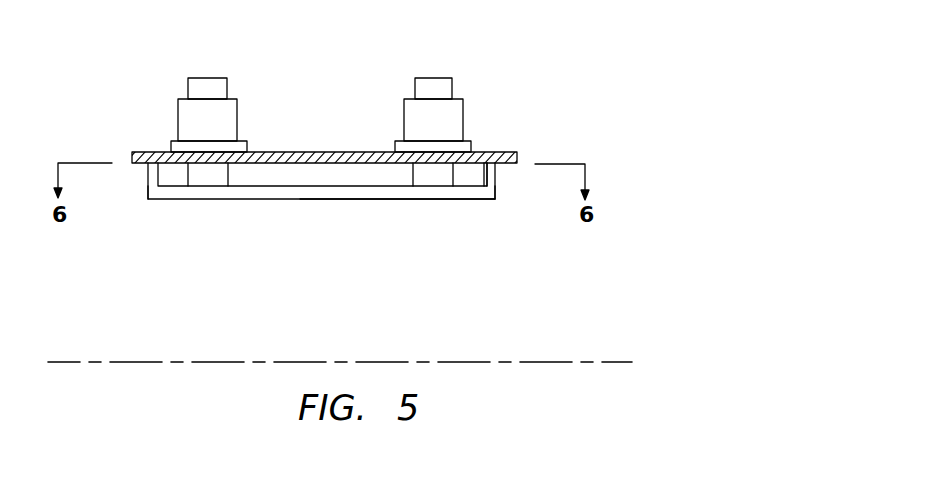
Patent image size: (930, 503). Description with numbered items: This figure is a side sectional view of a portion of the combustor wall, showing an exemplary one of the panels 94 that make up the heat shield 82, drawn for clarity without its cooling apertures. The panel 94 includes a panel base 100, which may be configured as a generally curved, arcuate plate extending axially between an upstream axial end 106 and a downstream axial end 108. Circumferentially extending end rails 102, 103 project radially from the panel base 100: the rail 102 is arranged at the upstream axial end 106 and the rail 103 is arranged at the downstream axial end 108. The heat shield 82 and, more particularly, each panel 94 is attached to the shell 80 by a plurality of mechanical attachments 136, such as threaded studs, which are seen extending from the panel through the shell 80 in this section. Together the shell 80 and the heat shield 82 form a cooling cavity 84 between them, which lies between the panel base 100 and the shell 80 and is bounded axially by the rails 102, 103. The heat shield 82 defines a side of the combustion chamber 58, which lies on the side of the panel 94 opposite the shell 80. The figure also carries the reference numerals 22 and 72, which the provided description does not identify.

The ground / reference plane 22 is at (630, 360).
The combustion chamber 58 is at (363, 290).
The upper region / surface 72 is at (325, 70).
The shell 80 is at (503, 157).
The heat shield 82 is at (397, 244).
The panel 94 is at (460, 203).
The cooling cavity 84 is at (312, 178).
The panel base 100 is at (253, 200).
The end rail 102 is at (154, 173).
The end rail 103 is at (492, 175).
The upstream axial end 106 is at (148, 190).
The downstream axial end 108 is at (498, 186).
The mechanical attachment 136 is at (228, 89).